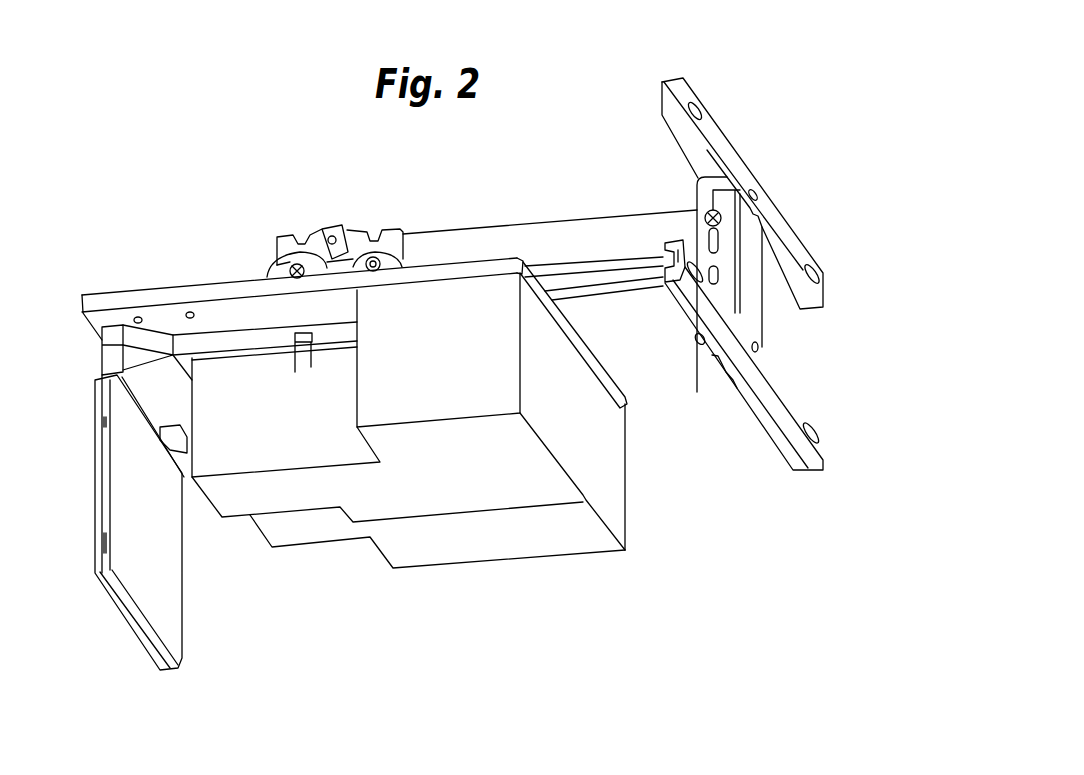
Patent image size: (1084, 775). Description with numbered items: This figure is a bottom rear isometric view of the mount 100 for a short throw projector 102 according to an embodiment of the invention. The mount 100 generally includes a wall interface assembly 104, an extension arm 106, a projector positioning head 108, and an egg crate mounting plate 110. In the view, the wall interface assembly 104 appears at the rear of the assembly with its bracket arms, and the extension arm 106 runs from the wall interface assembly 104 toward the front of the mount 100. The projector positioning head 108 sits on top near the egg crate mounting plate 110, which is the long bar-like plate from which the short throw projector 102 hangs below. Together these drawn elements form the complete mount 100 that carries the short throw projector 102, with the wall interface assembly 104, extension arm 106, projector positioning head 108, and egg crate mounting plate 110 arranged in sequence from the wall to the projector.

The mount 100 is at (446, 195).
The short throw projector 102 is at (582, 543).
The wall interface assembly 104 is at (807, 463).
The extension arm 106 is at (578, 233).
The projector positioning head 108 is at (300, 235).
The egg crate mounting plate 110 is at (200, 291).